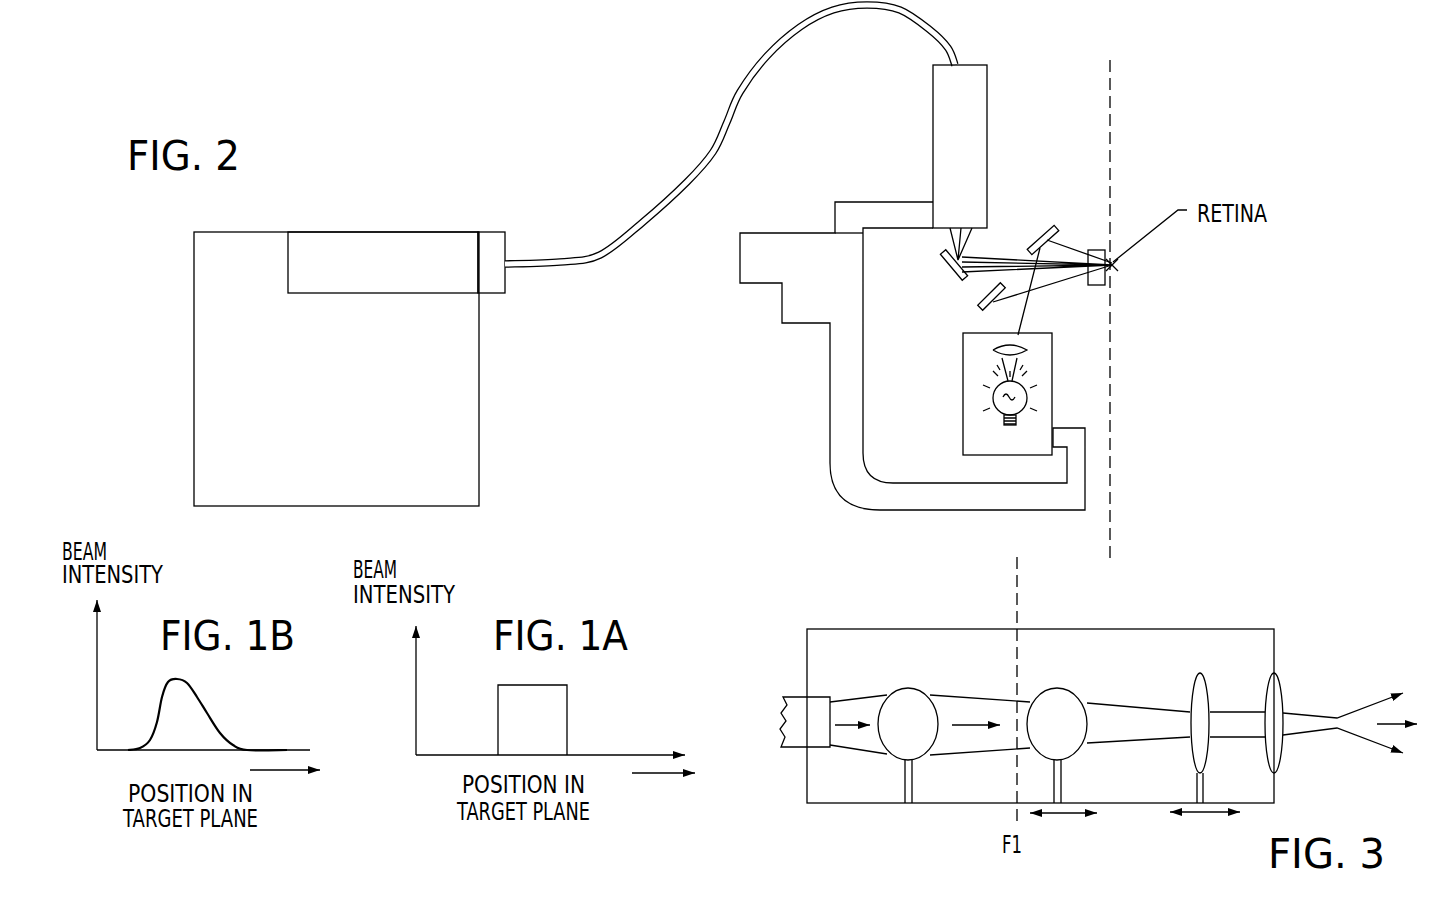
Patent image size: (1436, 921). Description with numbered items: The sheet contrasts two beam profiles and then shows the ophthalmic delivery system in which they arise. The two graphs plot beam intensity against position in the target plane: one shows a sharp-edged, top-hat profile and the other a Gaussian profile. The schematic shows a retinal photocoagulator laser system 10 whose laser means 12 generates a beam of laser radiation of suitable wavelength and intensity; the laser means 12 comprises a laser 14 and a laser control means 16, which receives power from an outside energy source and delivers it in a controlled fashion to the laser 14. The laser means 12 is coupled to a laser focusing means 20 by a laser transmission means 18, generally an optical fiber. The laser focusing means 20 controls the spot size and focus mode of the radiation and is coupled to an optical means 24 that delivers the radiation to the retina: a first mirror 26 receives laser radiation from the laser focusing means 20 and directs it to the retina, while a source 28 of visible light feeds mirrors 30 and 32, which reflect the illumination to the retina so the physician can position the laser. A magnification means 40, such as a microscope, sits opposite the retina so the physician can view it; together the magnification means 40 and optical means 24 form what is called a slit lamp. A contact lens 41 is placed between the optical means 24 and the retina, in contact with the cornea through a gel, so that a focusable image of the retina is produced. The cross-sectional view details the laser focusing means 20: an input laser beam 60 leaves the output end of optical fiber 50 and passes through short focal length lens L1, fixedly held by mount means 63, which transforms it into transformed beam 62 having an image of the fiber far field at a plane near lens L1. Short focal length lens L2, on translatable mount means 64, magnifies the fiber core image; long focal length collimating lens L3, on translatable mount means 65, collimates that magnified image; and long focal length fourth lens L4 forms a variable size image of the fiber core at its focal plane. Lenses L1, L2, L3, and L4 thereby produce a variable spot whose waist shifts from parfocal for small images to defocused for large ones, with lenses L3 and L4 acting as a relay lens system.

In FIG. 2, the retinal photocoagulator laser system 10 is at (557, 138).
In FIG. 2, the laser means 12 is at (305, 230).
In FIG. 2, the laser 14 is at (390, 232).
In FIG. 2, the laser control means 16 is at (480, 368).
In FIG. 2, the laser transmission means 18 is at (807, 38).
In FIG. 2, the laser focusing means 20 is at (987, 112).
In FIG. 3, the laser focusing means 20 is at (1277, 648).
In FIG. 2, the optical means 24 is at (1082, 330).
In FIG. 2, the first mirror 26 is at (950, 268).
In FIG. 2, the source of visible light 28 is at (1007, 425).
In FIG. 2, the mirror 30 is at (992, 336).
In FIG. 2, the mirror 32 is at (1040, 236).
In FIG. 2, the magnification means 40 is at (790, 323).
In FIG. 2, the contact lens 41 is at (1108, 287).
In FIG. 3, the optical fiber 50 is at (797, 747).
In FIG. 3, the input laser beam 60 is at (862, 695).
In FIG. 3, the transformed beam 62 is at (973, 695).
In FIG. 3, the mount means 63 is at (902, 787).
In FIG. 3, the translatable mount means 64 is at (1063, 800).
In FIG. 3, the translatable mount means 65 is at (1192, 785).
In FIG. 3, the short focal length lens L1 is at (915, 688).
In FIG. 3, the short focal length lens L2 is at (1055, 688).
In FIG. 3, the long focal length collimating lens L3 is at (1200, 673).
In FIG. 3, the fourth lens L4 is at (1280, 757).